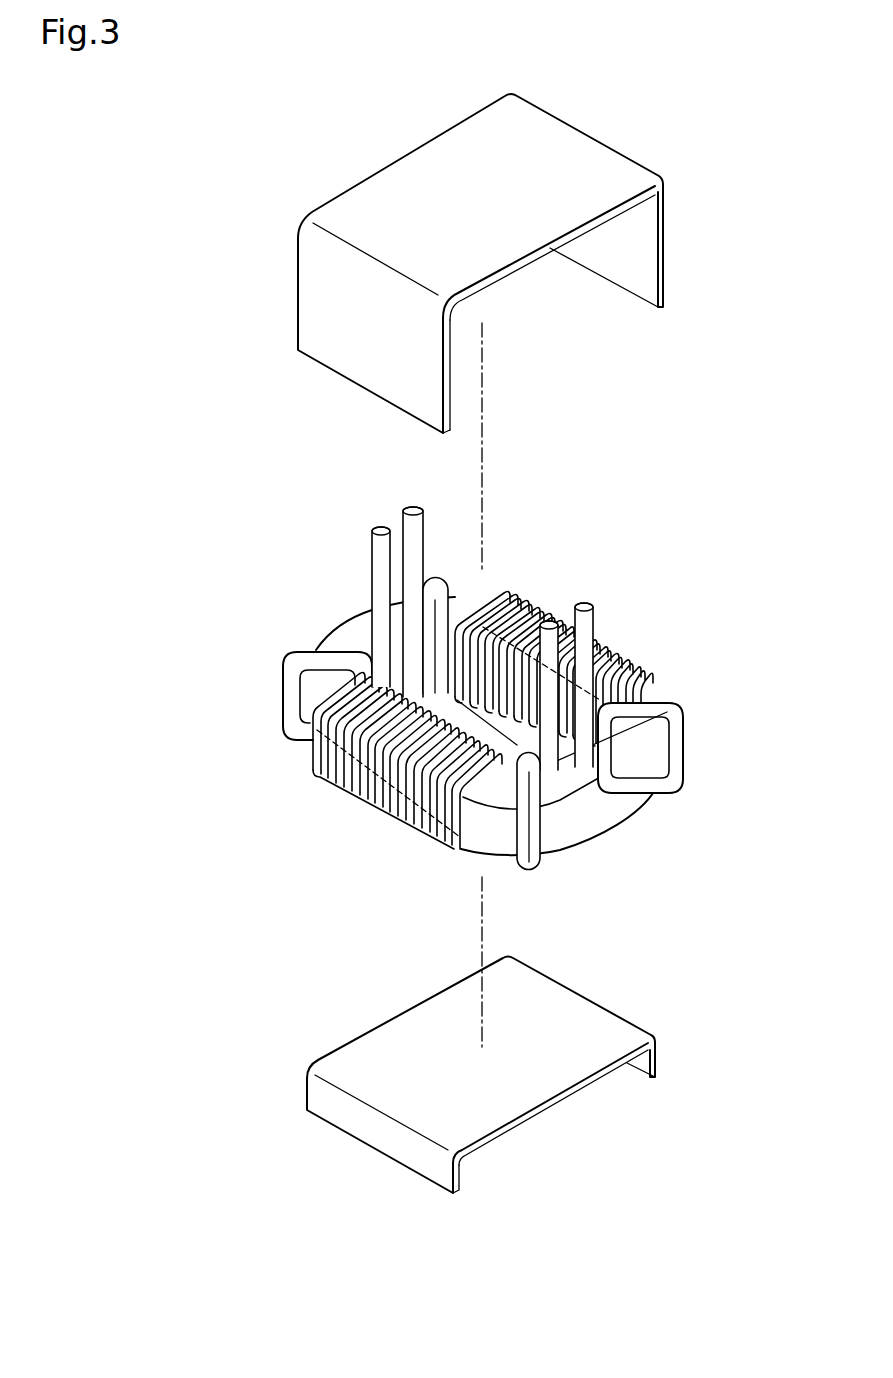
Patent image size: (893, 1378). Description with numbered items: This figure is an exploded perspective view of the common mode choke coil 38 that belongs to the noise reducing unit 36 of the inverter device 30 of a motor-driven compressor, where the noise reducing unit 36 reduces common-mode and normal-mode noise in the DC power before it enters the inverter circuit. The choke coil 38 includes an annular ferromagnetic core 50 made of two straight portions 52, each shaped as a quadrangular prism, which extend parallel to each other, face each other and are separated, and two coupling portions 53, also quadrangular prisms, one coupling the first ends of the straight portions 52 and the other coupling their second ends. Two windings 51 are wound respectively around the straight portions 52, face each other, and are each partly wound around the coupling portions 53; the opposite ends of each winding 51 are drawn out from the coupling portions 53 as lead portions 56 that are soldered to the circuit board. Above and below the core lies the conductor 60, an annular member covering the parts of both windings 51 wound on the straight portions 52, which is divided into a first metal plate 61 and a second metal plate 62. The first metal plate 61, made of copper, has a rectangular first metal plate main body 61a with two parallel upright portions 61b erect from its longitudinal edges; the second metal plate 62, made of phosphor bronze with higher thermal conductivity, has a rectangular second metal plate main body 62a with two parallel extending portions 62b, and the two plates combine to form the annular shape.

The inverter device 30 is at (286, 144).
The noise reducing unit 36 is at (709, 194).
The common mode choke coil 38 is at (252, 277).
The core 50 is at (475, 597).
The winding 51 is at (610, 637).
The straight portion 52 is at (553, 627).
The coupling portion 53 is at (348, 633).
The lead portion 56 is at (412, 507).
The conductor 60 is at (175, 598).
The first metal plate 61 is at (315, 1082).
The first metal plate main body 61a is at (422, 1027).
The upright portion 61b is at (377, 1138).
The second metal plate 62 is at (312, 328).
The second metal plate main body 62a is at (427, 163).
The extending portion 62b is at (364, 378).